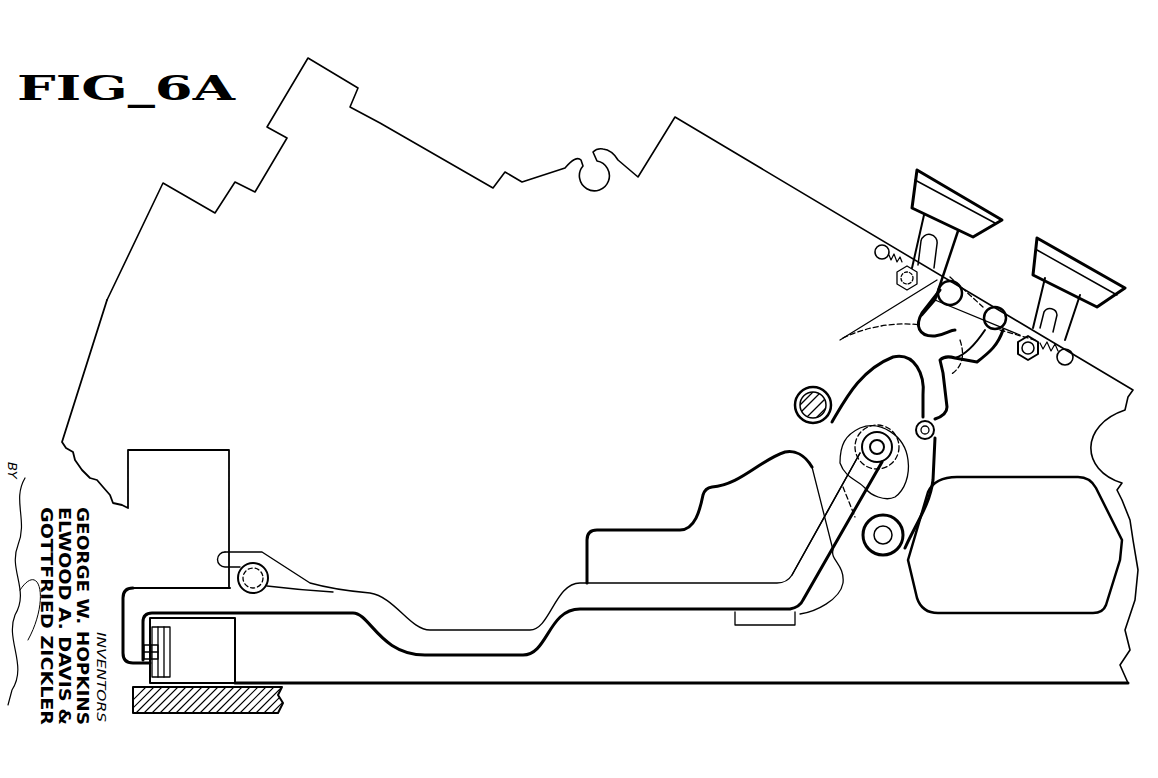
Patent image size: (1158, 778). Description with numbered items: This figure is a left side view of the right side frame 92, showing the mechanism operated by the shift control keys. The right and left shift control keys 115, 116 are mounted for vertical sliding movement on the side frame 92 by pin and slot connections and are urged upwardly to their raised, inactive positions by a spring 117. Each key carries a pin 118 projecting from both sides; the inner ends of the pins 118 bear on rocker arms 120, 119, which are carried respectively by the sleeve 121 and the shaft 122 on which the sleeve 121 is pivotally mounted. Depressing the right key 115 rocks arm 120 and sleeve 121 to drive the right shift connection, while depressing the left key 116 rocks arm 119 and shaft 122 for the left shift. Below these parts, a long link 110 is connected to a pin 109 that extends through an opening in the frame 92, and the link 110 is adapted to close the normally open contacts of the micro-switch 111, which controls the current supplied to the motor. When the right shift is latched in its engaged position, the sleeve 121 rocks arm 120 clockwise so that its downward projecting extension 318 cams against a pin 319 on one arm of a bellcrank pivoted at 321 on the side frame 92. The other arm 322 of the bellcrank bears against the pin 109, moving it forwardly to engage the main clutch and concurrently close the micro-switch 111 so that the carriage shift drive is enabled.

The side frame 92 is at (408, 148).
The pin 109 is at (877, 447).
The long link 110 is at (452, 637).
The micro-switch 111 is at (222, 648).
The right shift control key 115 is at (1073, 307).
The left shift control key 116 is at (925, 228).
The spring 117 is at (1058, 344).
The pin 118 is at (985, 300).
The rocker arm 119 is at (933, 320).
The rocker arm 120 is at (987, 350).
The sleeve 121 is at (808, 395).
The shaft 122 is at (795, 405).
The downward projecting extension 318 is at (942, 398).
The pin 319 is at (935, 430).
The bellcrank pivot 321 is at (890, 535).
The bellcrank arm 322 is at (848, 455).